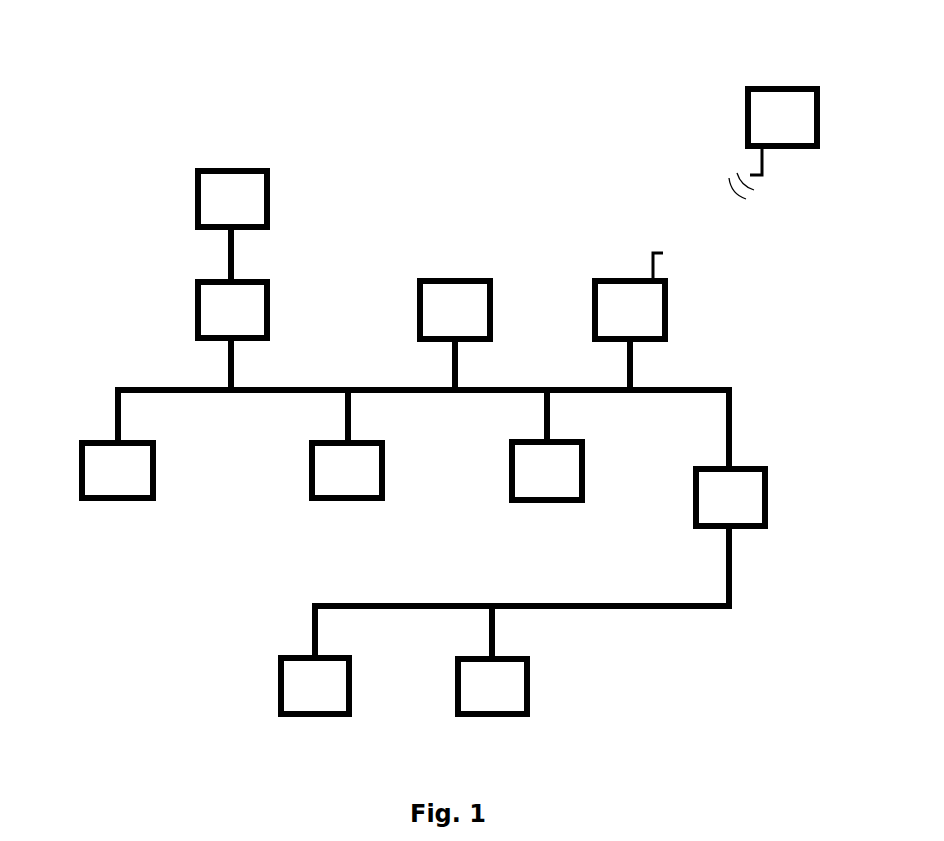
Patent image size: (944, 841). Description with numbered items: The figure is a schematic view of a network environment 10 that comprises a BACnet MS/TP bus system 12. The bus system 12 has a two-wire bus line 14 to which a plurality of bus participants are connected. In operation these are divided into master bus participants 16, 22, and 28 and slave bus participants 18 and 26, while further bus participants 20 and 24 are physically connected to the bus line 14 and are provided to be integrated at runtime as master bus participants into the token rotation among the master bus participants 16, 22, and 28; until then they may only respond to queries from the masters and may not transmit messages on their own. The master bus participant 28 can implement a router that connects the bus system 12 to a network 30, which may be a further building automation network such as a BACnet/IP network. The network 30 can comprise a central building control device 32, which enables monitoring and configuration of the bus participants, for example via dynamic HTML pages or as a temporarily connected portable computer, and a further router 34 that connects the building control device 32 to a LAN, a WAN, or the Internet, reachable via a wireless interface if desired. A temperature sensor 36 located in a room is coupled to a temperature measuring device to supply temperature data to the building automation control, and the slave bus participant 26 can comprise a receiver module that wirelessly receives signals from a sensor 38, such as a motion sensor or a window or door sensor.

The network environment 10 is at (495, 108).
The BACnet MS/TP bus system 12 is at (522, 292).
The bus line 14 is at (680, 388).
The master bus participant 16 is at (128, 501).
The slave bus participant 18 is at (270, 293).
The bus participant to be integrated 20 is at (353, 501).
The master bus participant 22 is at (485, 278).
The bus participant to be integrated 24 is at (550, 503).
The slave bus participant 26 is at (668, 327).
The master bus participant 28 is at (757, 466).
The network 30 is at (623, 677).
The building control device 32 is at (455, 690).
The further router 34 is at (278, 687).
The temperature sensor 36 is at (270, 187).
The sensor 38 is at (745, 105).